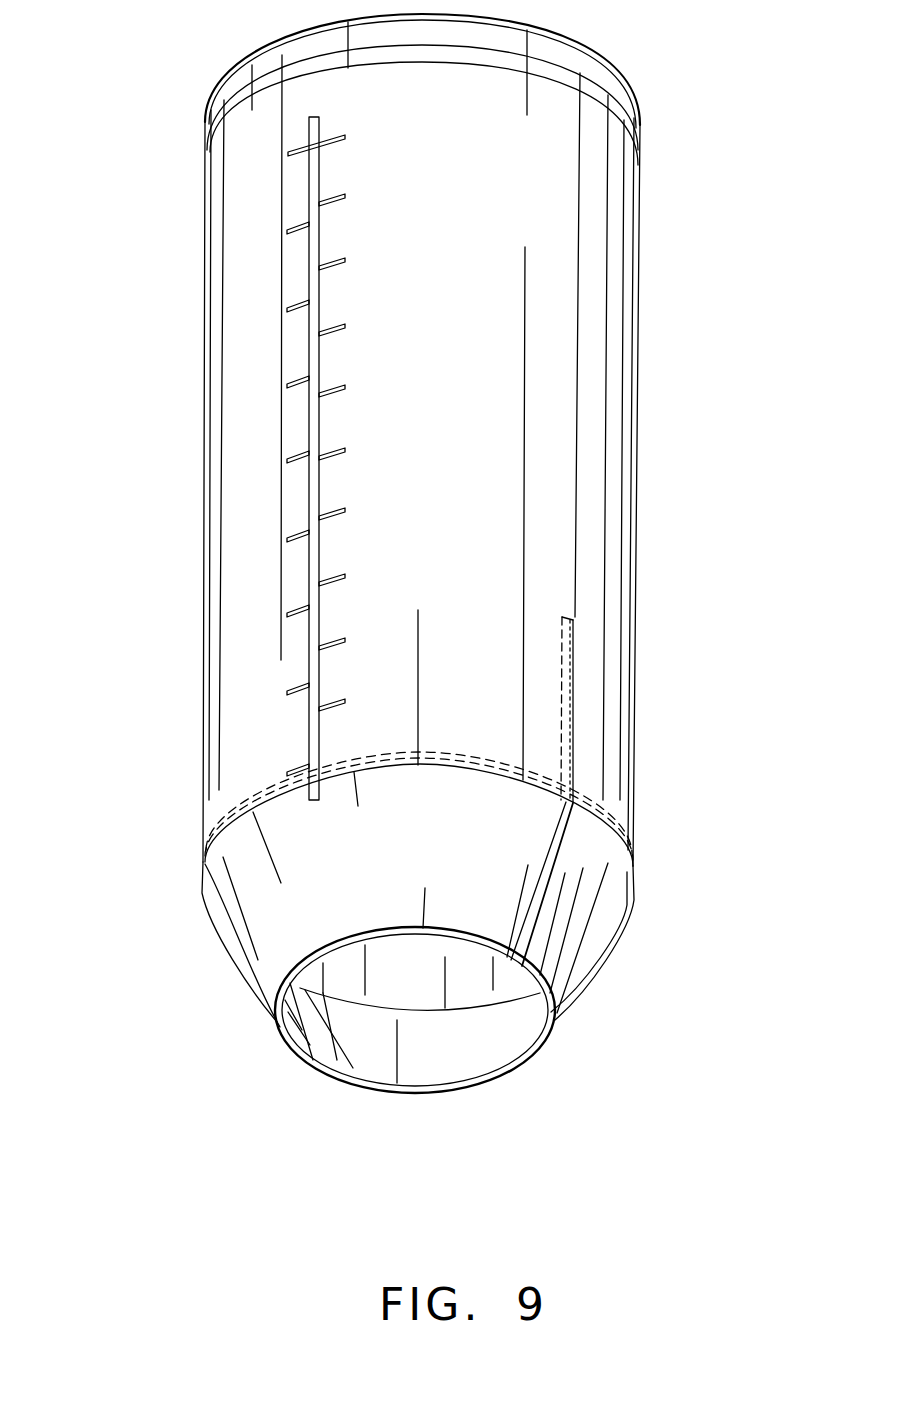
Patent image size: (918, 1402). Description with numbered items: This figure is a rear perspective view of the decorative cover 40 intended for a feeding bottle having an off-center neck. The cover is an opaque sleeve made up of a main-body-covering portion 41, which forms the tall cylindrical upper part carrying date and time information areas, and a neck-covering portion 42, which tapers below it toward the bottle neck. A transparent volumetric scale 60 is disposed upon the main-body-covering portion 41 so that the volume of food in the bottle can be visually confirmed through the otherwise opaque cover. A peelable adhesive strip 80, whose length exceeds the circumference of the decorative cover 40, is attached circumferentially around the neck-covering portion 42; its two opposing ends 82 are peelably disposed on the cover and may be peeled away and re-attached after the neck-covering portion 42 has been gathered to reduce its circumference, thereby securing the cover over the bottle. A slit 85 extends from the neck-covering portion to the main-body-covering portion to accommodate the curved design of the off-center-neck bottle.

The decorative cover 40 is at (660, 263).
The main-body-covering portion 41 is at (558, 133).
The neck-covering portion 42 is at (620, 787).
The volumetric scale 60 is at (308, 297).
The peelable adhesive strip 80 is at (610, 821).
The opposing ends 82 is at (577, 700).
The slit 85 is at (510, 967).